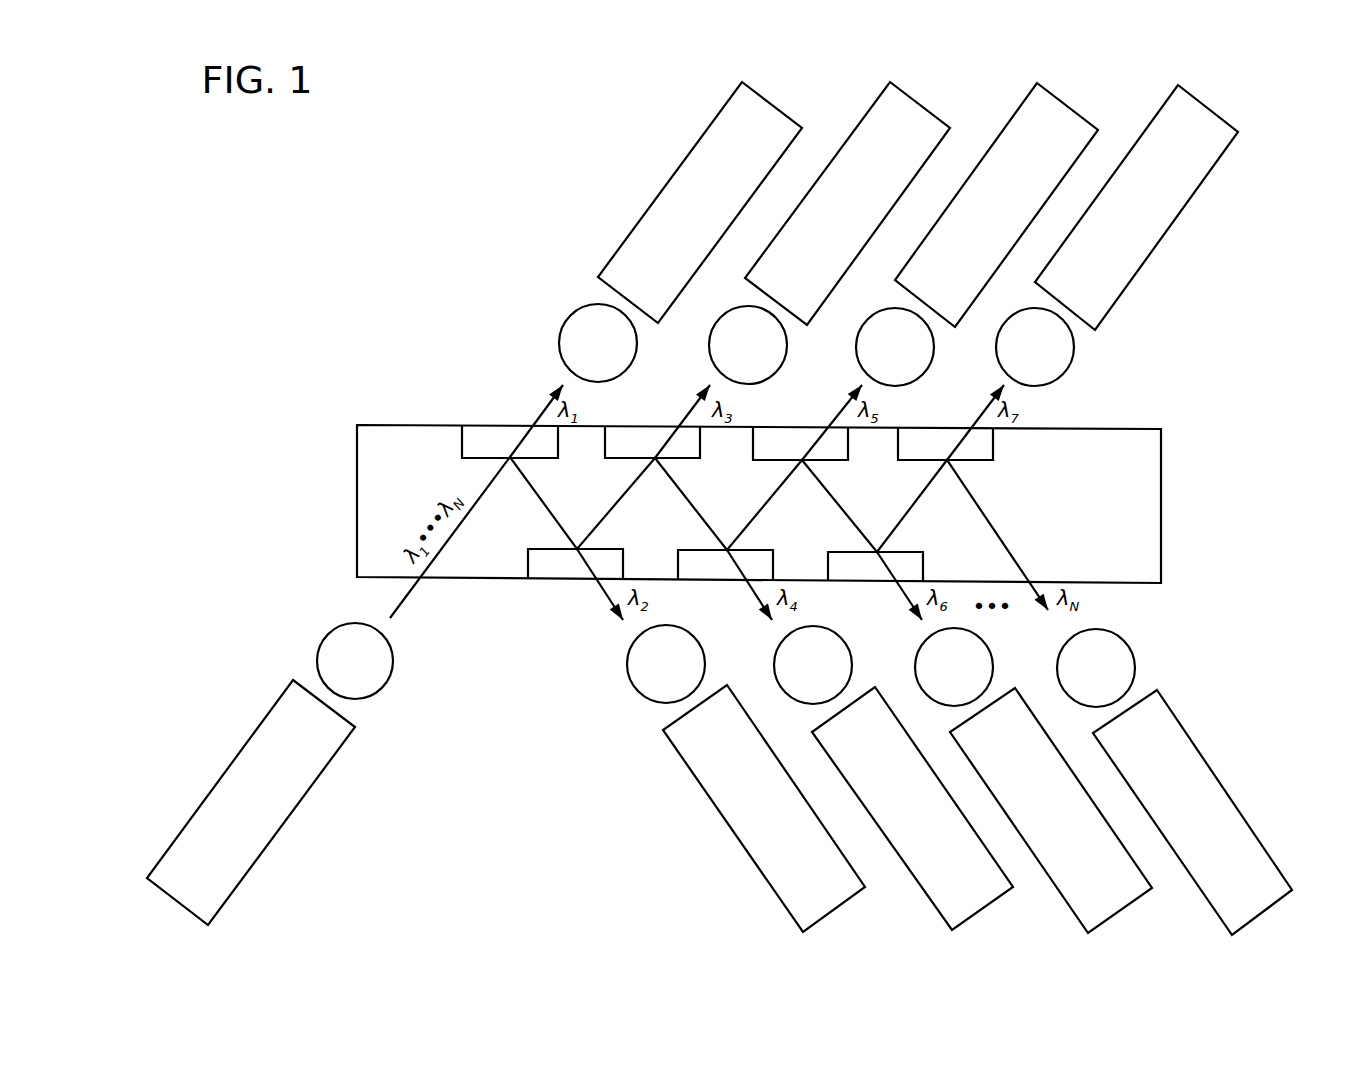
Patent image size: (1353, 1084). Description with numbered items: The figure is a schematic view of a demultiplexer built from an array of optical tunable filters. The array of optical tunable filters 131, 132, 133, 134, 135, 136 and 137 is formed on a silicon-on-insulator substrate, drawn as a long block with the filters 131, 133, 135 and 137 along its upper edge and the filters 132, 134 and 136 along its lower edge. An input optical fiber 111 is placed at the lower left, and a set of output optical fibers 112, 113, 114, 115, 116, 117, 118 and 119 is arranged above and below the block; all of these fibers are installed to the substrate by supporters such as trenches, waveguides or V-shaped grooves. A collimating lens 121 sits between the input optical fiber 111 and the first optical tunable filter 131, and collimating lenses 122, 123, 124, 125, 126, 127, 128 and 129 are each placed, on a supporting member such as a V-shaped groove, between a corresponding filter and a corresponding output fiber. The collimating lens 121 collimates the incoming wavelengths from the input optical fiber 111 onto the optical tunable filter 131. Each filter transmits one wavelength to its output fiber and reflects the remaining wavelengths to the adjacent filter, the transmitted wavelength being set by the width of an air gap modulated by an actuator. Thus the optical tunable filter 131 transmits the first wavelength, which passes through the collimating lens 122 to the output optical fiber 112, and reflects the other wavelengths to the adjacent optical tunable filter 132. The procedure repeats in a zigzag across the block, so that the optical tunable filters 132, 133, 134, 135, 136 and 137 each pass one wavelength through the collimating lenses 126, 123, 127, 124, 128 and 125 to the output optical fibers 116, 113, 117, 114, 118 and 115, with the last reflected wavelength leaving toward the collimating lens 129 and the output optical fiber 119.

The input optical fiber 111 is at (232, 778).
The output optical fiber 112 is at (705, 158).
The output optical fiber 113 is at (875, 150).
The output optical fiber 114 is at (1015, 158).
The output optical fiber 115 is at (1163, 160).
The output optical fiber 116 is at (772, 857).
The output optical fiber 117 is at (928, 868).
The output optical fiber 118 is at (1070, 863).
The output optical fiber 119 is at (1212, 872).
The collimating lens 121 is at (328, 652).
The collimating lens 122 is at (573, 342).
The collimating lens 123 is at (727, 343).
The collimating lens 124 is at (920, 343).
The collimating lens 125 is at (1053, 353).
The collimating lens 126 is at (642, 667).
The collimating lens 127 is at (797, 668).
The collimating lens 128 is at (972, 670).
The collimating lens 129 is at (1120, 672).
The optical tunable filter 131 is at (500, 437).
The optical tunable filter 132 is at (560, 570).
The optical tunable filter 133 is at (643, 435).
The optical tunable filter 134 is at (700, 567).
The optical tunable filter 135 is at (787, 440).
The optical tunable filter 136 is at (848, 573).
The optical tunable filter 137 is at (932, 442).